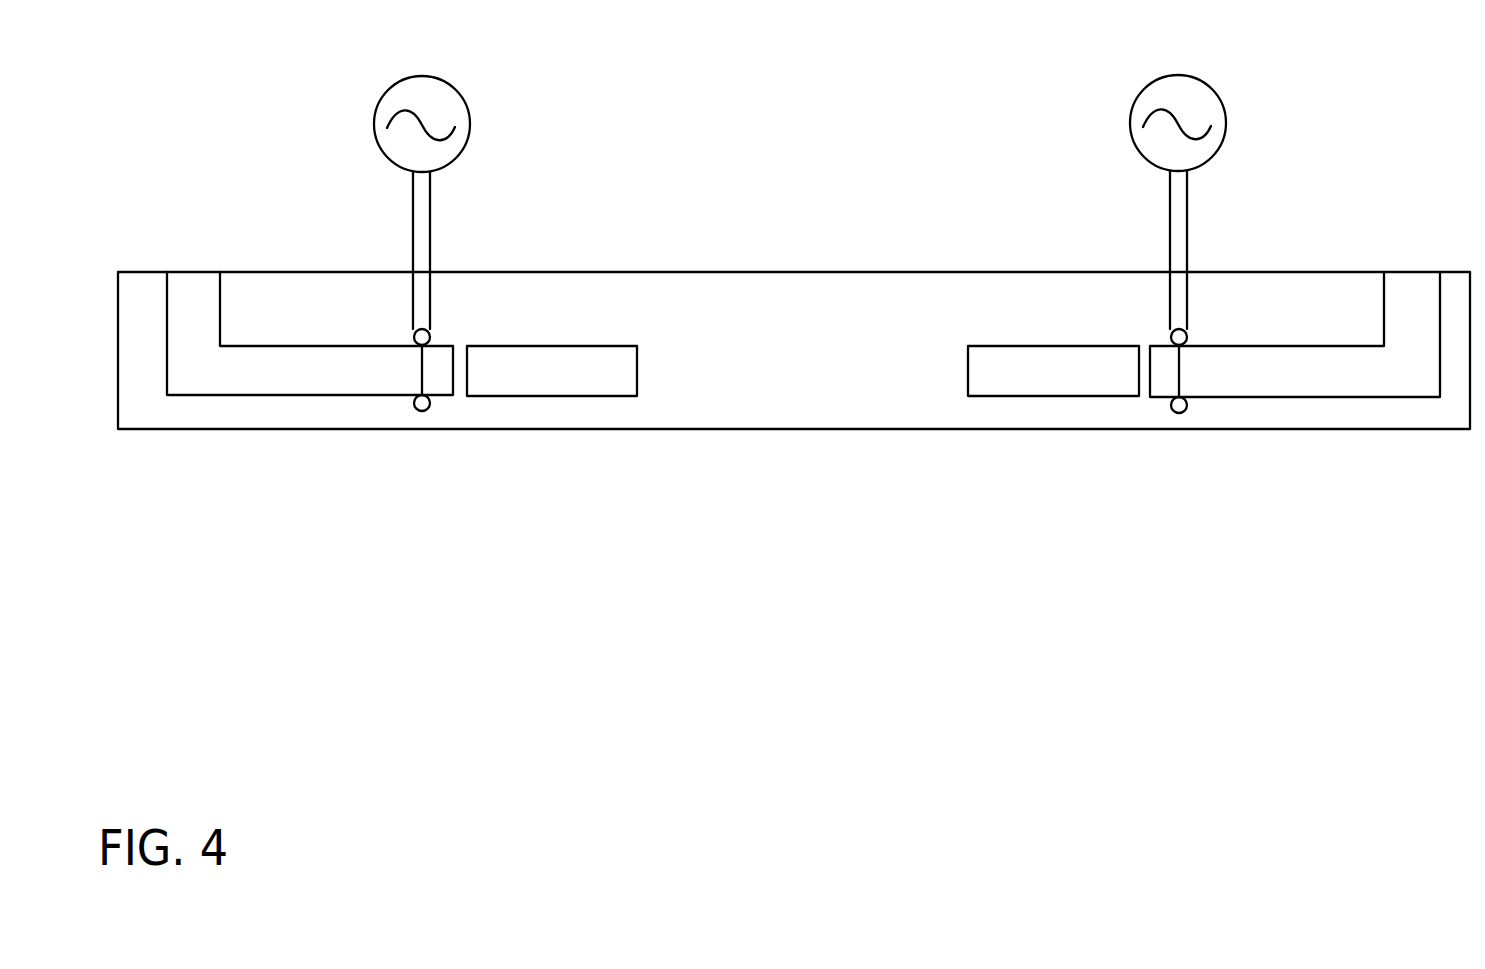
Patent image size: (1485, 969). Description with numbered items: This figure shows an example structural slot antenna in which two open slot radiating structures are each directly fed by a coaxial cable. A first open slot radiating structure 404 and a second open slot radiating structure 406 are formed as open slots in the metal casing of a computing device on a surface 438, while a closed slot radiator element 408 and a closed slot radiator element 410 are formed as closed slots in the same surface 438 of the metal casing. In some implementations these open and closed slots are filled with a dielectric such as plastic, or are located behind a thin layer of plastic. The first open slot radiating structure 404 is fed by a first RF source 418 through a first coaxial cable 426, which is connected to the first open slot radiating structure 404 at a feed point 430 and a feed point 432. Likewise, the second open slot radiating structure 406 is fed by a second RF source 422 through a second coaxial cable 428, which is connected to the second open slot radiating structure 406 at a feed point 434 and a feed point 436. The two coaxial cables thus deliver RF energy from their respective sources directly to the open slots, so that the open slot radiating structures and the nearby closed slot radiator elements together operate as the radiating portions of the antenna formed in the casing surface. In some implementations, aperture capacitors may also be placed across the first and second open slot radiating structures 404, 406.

The first open slot radiating structure 404 is at (247, 395).
The second open slot radiating structure 406 is at (1355, 397).
The closed slot radiator element 408 is at (562, 396).
The closed slot radiator element 410 is at (1032, 397).
The first RF source 418 is at (466, 100).
The second RF source 422 is at (1137, 102).
The first coaxial cable 426 is at (430, 235).
The second coaxial cable 428 is at (1170, 225).
The feed point 430 is at (430, 330).
The feed point 432 is at (428, 410).
The feed point 434 is at (1170, 330).
The feed point 436 is at (1174, 411).
The surface 438 is at (803, 407).